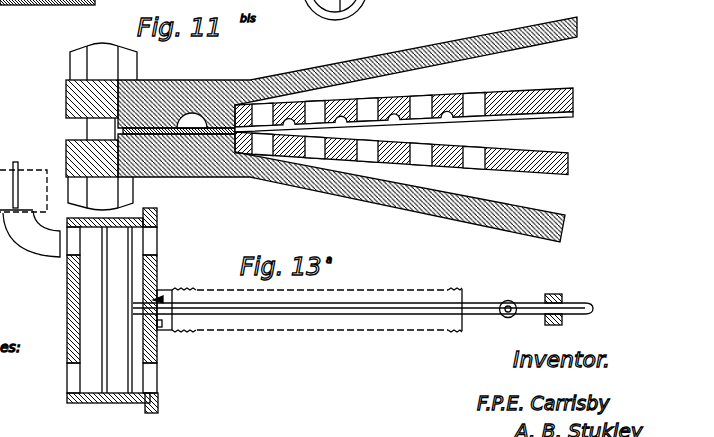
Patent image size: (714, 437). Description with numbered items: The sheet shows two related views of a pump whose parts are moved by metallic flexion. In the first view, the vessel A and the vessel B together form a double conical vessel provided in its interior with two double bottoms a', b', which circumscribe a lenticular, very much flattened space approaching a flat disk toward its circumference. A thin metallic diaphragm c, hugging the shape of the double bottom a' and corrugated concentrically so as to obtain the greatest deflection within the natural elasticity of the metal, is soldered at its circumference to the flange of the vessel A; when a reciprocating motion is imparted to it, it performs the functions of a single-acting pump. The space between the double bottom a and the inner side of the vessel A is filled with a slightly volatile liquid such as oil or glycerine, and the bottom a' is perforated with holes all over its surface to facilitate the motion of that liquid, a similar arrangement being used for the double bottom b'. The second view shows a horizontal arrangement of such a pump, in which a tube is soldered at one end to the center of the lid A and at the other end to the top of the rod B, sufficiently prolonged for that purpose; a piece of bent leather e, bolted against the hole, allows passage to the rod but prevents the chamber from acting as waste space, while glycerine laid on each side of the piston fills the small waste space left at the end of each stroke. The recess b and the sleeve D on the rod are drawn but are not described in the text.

In FIG. 11bis, the vessel A is at (403, 51).
In FIG. 11bis, the vessel B is at (407, 209).
In FIG. 11bis, the double bottom a' is at (404, 102).
In FIG. 11bis, the double bottom b' is at (401, 164).
In FIG. 11bis, the recess in upper jaw b is at (200, 93).
In FIG. 11bis, the metallic diaphragm c is at (30, 209).
In FIG. 13, the double bottom a is at (164, 300).
In FIG. 13, the bent leather e is at (160, 300).
In FIG. 13, the sleeve on rod D is at (463, 302).